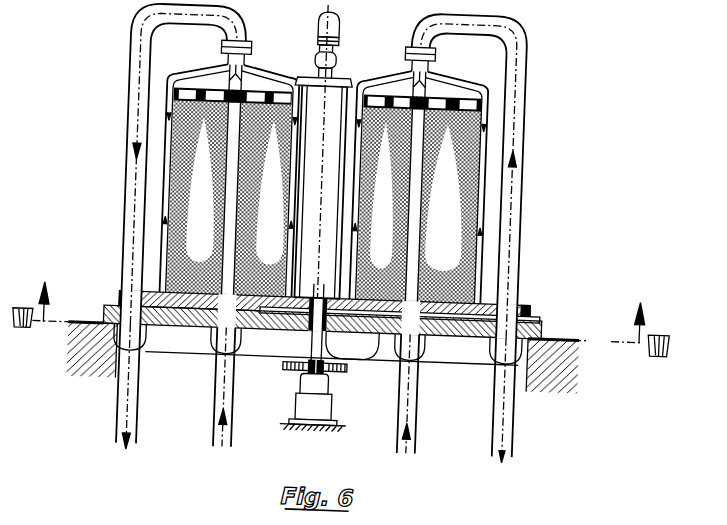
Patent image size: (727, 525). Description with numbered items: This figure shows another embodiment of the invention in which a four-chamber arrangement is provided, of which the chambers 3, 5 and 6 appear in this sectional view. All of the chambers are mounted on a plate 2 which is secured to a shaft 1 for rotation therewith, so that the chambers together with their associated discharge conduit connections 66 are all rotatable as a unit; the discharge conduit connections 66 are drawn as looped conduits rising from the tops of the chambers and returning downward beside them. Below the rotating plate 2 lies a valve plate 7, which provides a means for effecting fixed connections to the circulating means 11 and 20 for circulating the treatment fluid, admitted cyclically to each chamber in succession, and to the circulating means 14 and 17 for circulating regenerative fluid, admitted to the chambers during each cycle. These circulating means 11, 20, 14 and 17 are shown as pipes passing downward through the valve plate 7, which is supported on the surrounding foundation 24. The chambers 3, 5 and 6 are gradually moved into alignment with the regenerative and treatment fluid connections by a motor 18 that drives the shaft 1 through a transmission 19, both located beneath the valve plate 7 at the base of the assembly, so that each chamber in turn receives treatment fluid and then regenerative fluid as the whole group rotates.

The discharge conduit connections 66 is at (126, 127).
The chamber 6 is at (307, 87).
The chamber 3 is at (240, 208).
The chamber 5 is at (352, 200).
The shaft 1 is at (317, 293).
The plate 2 is at (533, 309).
The valve plate 7 is at (341, 318).
The foundation 24 is at (562, 366).
The circulating means 11 is at (216, 386).
The circulating means 20 is at (142, 426).
The circulating means 14 is at (418, 386).
The circulating means 17 is at (504, 425).
The transmission 19 is at (332, 370).
The motor 18 is at (329, 413).